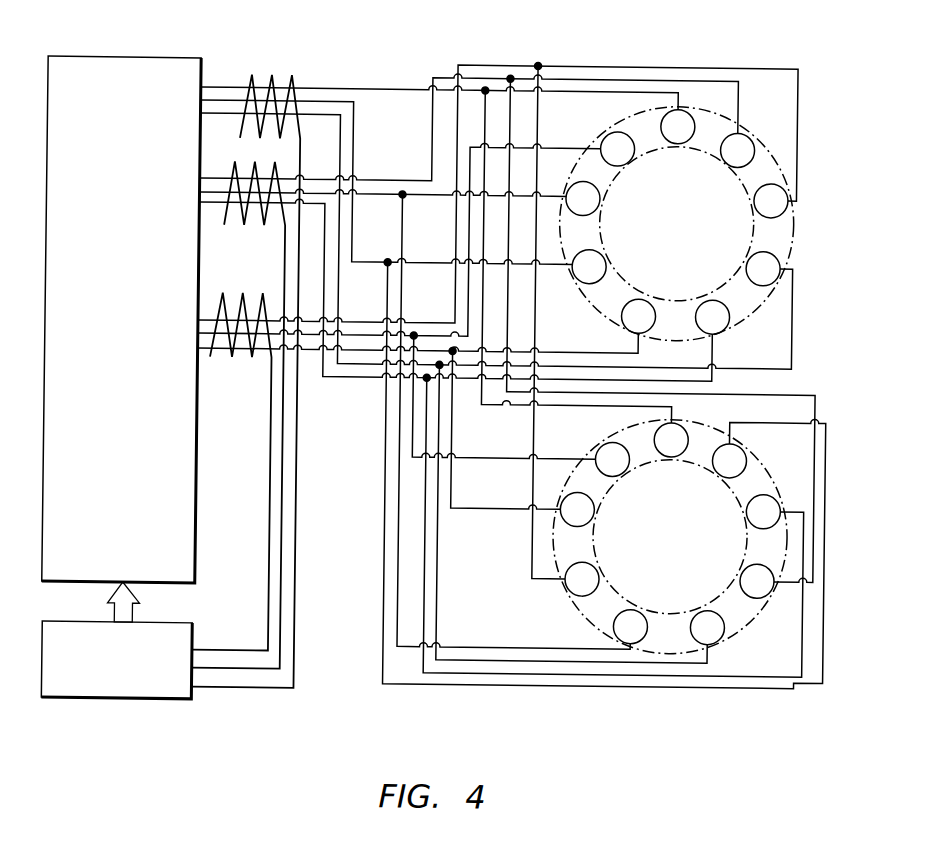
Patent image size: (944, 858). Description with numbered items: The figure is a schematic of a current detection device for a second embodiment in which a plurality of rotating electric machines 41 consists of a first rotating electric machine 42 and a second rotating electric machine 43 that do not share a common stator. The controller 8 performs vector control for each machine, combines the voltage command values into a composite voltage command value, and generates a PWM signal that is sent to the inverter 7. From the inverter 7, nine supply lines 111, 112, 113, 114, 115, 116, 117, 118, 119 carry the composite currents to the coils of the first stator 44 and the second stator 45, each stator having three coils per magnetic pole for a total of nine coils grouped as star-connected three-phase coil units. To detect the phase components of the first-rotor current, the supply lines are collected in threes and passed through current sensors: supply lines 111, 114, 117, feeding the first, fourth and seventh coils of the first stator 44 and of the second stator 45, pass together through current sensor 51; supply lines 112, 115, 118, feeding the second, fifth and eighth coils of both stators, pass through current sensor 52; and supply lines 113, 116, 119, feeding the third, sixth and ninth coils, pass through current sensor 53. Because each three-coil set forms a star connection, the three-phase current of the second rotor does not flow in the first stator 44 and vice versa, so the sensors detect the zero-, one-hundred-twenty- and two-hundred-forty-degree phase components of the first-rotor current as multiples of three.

The inverter 7 is at (123, 61).
The controller 8 is at (140, 702).
The current sensor 51 is at (288, 77).
The current sensor 52 is at (252, 164).
The current sensor 53 is at (242, 295).
The supply line 111 is at (359, 86).
The supply line 112 is at (374, 178).
The supply line 113 is at (349, 318).
The supply line 114 is at (315, 117).
The supply line 115 is at (323, 238).
The supply line 116 is at (306, 352).
The supply line 117 is at (354, 129).
The supply line 118 is at (372, 196).
The supply line 119 is at (431, 333).
The plurality of rotating electric machines 41 is at (723, 380).
The first rotating electric machine 42 is at (707, 224).
The second rotating electric machine 43 is at (703, 499).
The first stator 44 is at (729, 285).
The second stator 45 is at (724, 595).